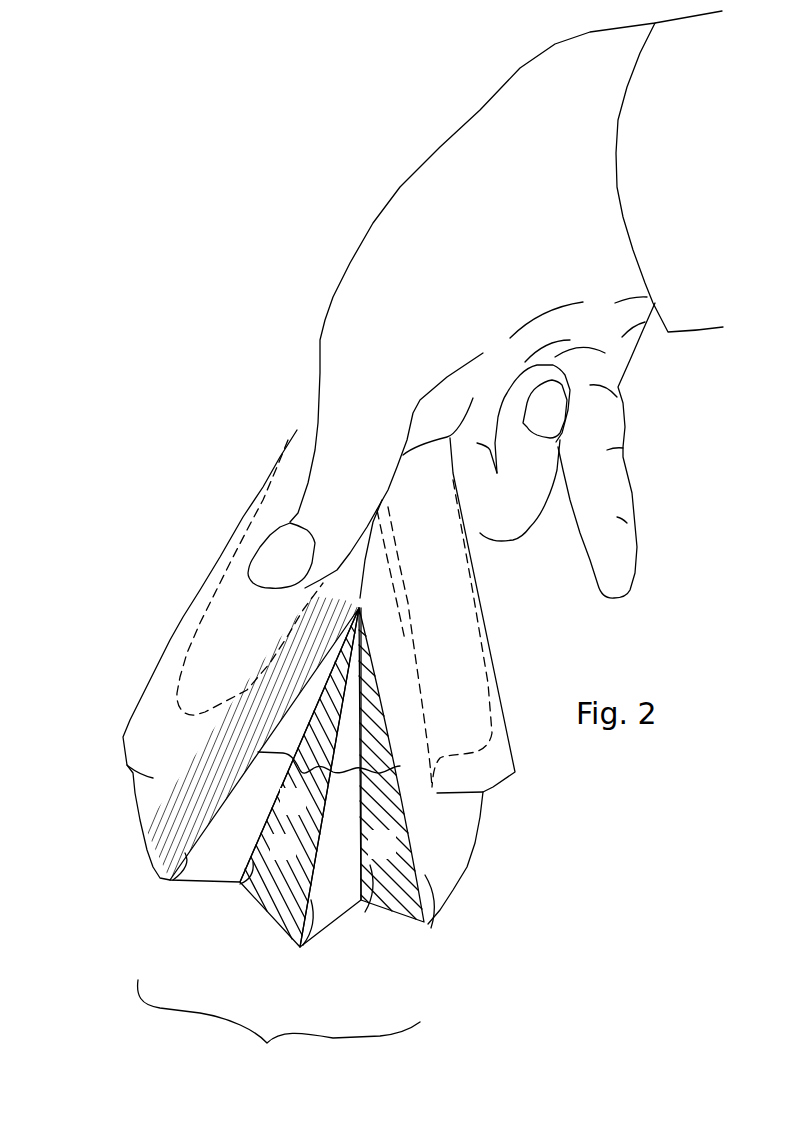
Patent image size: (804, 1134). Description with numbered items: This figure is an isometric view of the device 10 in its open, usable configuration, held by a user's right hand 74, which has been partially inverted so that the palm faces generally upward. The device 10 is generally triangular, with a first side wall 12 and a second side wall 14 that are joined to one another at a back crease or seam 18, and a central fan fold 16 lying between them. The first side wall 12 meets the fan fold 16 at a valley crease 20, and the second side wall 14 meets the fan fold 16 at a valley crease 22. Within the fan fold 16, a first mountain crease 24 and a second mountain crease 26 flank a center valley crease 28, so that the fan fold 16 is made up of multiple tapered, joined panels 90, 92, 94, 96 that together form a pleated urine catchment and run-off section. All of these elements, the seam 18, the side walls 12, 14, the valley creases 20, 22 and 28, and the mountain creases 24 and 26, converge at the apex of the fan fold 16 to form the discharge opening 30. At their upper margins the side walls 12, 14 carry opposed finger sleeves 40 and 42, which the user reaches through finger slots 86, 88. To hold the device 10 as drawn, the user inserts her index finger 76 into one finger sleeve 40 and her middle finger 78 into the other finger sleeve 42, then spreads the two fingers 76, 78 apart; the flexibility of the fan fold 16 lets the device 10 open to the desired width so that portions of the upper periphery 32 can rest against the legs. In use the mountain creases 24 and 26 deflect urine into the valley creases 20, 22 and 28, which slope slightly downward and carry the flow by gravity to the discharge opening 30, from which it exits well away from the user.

The device 10 is at (180, 480).
The first side wall 12 is at (136, 818).
The second side wall 14 is at (461, 818).
The central fan fold 16 is at (301, 778).
The back crease or seam 18 is at (365, 566).
The valley crease 20 is at (177, 880).
The valley crease 22 is at (427, 920).
The first mountain crease 24 is at (247, 883).
The second mountain crease 26 is at (370, 897).
The center valley crease 28 is at (303, 947).
The discharge opening 30 is at (357, 604).
The upper periphery 32 is at (279, 1033).
The finger sleeve 40 is at (186, 752).
The finger sleeve 42 is at (468, 775).
The hand 74 is at (430, 258).
The index finger 76 is at (230, 622).
The middle finger 78 is at (449, 610).
The finger slot 86 is at (295, 432).
The finger slot 88 is at (419, 451).
The panel 90 is at (222, 837).
The panel 92 is at (275, 858).
The panel 94 is at (330, 857).
The panel 96 is at (392, 856).